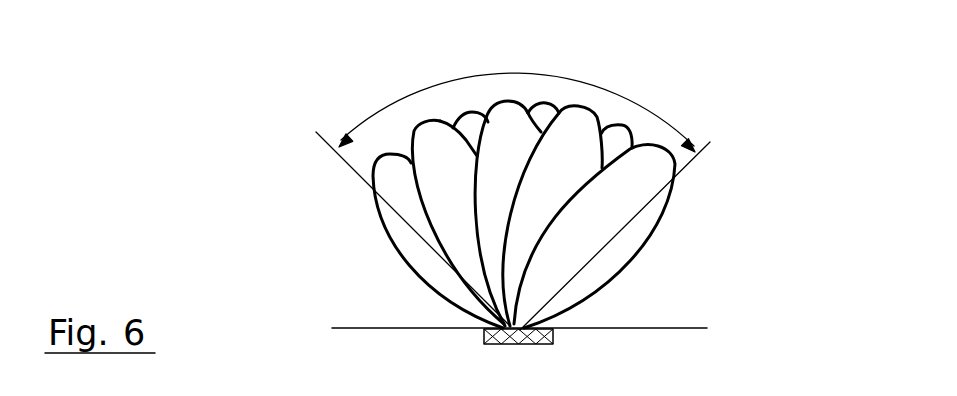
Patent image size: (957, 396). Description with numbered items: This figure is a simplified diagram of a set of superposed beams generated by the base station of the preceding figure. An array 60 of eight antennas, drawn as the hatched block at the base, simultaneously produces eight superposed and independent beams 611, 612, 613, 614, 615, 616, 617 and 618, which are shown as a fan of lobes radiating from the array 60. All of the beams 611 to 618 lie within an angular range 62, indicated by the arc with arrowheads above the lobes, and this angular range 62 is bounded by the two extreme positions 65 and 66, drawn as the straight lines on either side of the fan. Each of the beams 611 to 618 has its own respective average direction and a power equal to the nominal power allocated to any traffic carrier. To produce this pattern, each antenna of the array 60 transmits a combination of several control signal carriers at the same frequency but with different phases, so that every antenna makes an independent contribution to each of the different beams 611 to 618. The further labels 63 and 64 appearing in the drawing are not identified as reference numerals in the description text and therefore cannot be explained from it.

The array of antennas 60 is at (553, 340).
The angular range 62 is at (620, 92).
The central lobe cap 63 is at (503, 101).
The lobe edge 64 is at (457, 120).
The extreme position 65 is at (410, 258).
The extreme position 66 is at (642, 243).
The beam 611 is at (387, 220).
The beam 612 is at (424, 125).
The beam 613 is at (472, 111).
The beam 614 is at (524, 104).
The beam 615 is at (560, 112).
The beam 616 is at (590, 113).
The beam 617 is at (634, 131).
The beam 618 is at (673, 192).